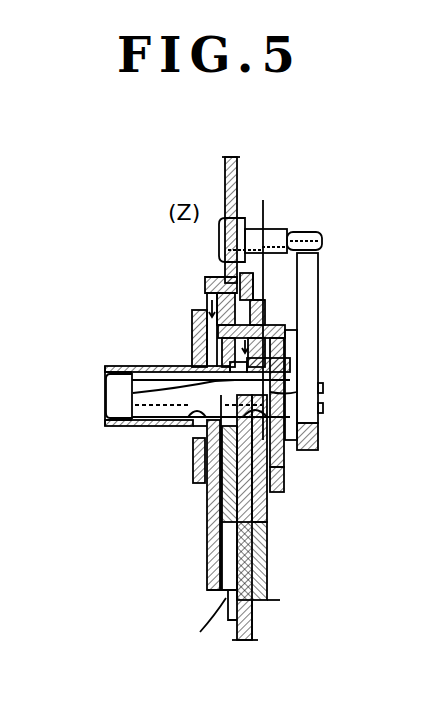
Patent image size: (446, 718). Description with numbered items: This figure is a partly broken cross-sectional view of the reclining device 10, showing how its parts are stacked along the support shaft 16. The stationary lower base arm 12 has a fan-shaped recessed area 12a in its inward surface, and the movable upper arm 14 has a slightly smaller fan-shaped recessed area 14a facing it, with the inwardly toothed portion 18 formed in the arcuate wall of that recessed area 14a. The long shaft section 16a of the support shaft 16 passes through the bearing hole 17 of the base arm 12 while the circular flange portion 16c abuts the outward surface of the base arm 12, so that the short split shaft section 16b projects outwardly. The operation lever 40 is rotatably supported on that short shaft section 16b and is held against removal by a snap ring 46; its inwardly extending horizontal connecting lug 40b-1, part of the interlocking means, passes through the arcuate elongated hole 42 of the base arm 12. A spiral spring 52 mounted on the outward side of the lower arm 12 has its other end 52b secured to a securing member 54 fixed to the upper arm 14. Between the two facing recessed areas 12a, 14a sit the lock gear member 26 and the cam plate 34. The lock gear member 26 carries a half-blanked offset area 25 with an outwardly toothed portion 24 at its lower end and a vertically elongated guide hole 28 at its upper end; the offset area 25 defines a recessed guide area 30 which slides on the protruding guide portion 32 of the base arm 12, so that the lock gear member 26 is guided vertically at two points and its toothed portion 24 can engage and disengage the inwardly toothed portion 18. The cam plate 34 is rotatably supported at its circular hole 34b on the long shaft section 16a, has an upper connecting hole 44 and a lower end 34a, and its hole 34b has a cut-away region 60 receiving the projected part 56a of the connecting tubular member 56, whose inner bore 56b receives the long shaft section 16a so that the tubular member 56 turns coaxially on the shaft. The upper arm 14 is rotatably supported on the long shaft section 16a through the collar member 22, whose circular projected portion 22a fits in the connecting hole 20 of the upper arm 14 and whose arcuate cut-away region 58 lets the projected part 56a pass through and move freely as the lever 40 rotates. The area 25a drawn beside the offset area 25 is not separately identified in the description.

The reclining device 10 is at (373, 162).
The lower base arm 12 is at (255, 630).
The fan-shaped recessed area 12a is at (263, 200).
The upper arm 14 is at (225, 178).
The fan-shaped recessed area 14a is at (212, 540).
The support shaft 16 is at (147, 368).
The long shaft section 16a is at (165, 428).
The short split shaft section 16b is at (323, 387).
The circular flange portion 16c is at (312, 410).
The bearing hole 17 is at (310, 428).
The inwardly toothed portion 18 is at (227, 573).
The connecting hole 20 is at (224, 470).
The collar member 22 is at (217, 322).
The circular projected portion 22a is at (212, 455).
The outwardly toothed portion 24 is at (236, 636).
The half-blanked offset area 25 is at (226, 596).
The bolt threaded portion 25a is at (258, 512).
The lock gear member 26 is at (266, 300).
The vertically elongated guide hole 28 is at (282, 482).
The recessed guide area 30 is at (265, 545).
The guide portion 32 is at (268, 600).
The cam plate 34 is at (217, 278).
The lower end 34a is at (211, 500).
The circular hole 34b is at (193, 442).
The operation lever 40 is at (288, 462).
The connecting lug 40b-1 is at (285, 313).
The arcuate elongated hole 42 is at (296, 337).
The upper connecting hole 44 is at (207, 300).
The snap ring 46 is at (288, 360).
The spiral spring 52 is at (320, 370).
The another end of spiral spring 52b is at (304, 228).
The securing member 54 is at (322, 238).
The connecting tubular member 56 is at (106, 425).
The projected part 56a is at (196, 345).
The inner bore 56b is at (108, 370).
The arcuate cut-away region 58 is at (124, 383).
The cut-away region 60 is at (135, 400).